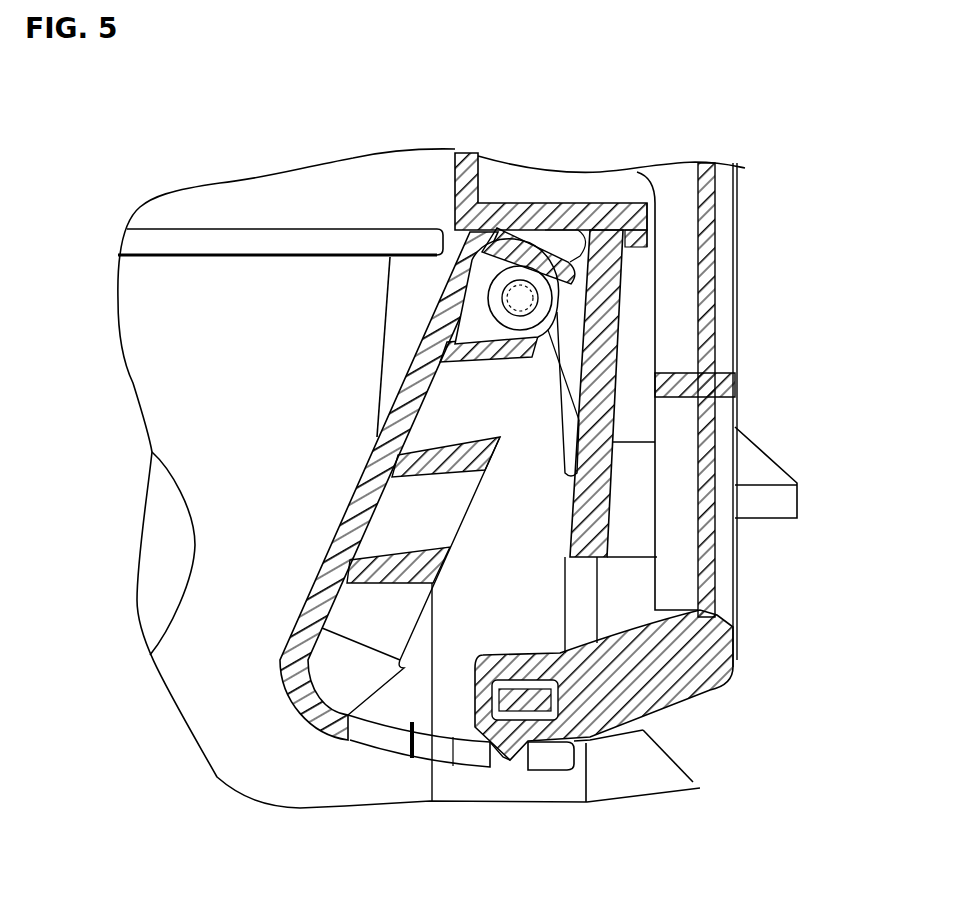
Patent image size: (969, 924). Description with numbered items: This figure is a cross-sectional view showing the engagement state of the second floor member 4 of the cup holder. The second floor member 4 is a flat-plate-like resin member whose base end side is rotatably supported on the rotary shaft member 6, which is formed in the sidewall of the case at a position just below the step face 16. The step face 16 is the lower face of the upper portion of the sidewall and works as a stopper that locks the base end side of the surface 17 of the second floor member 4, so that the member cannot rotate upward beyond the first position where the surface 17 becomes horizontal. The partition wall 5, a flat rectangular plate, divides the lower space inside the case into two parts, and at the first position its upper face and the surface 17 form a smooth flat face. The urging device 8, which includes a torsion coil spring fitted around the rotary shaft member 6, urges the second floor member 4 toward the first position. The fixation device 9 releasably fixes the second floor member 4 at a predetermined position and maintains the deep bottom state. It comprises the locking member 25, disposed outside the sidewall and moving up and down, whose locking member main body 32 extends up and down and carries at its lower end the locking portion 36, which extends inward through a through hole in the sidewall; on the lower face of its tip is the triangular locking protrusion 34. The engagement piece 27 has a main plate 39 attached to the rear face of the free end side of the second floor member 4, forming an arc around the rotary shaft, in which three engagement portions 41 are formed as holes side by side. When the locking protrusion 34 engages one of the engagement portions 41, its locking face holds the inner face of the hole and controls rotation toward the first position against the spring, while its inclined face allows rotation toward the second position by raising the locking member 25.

The second floor member 4 is at (297, 707).
The partition wall 5 is at (160, 275).
The rotary shaft member 6 is at (520, 292).
The urging device 8 is at (558, 300).
The fixation device 9 is at (740, 672).
The step face 16 is at (580, 203).
The surface 17 is at (332, 546).
The locking member 25 is at (738, 192).
The engagement piece 27 is at (563, 771).
The locking member main body 32 is at (737, 574).
The locking protrusion 34 is at (500, 762).
The locking portion 36 is at (677, 707).
The main plate 39 is at (587, 748).
The engagement portions 41 is at (405, 748).